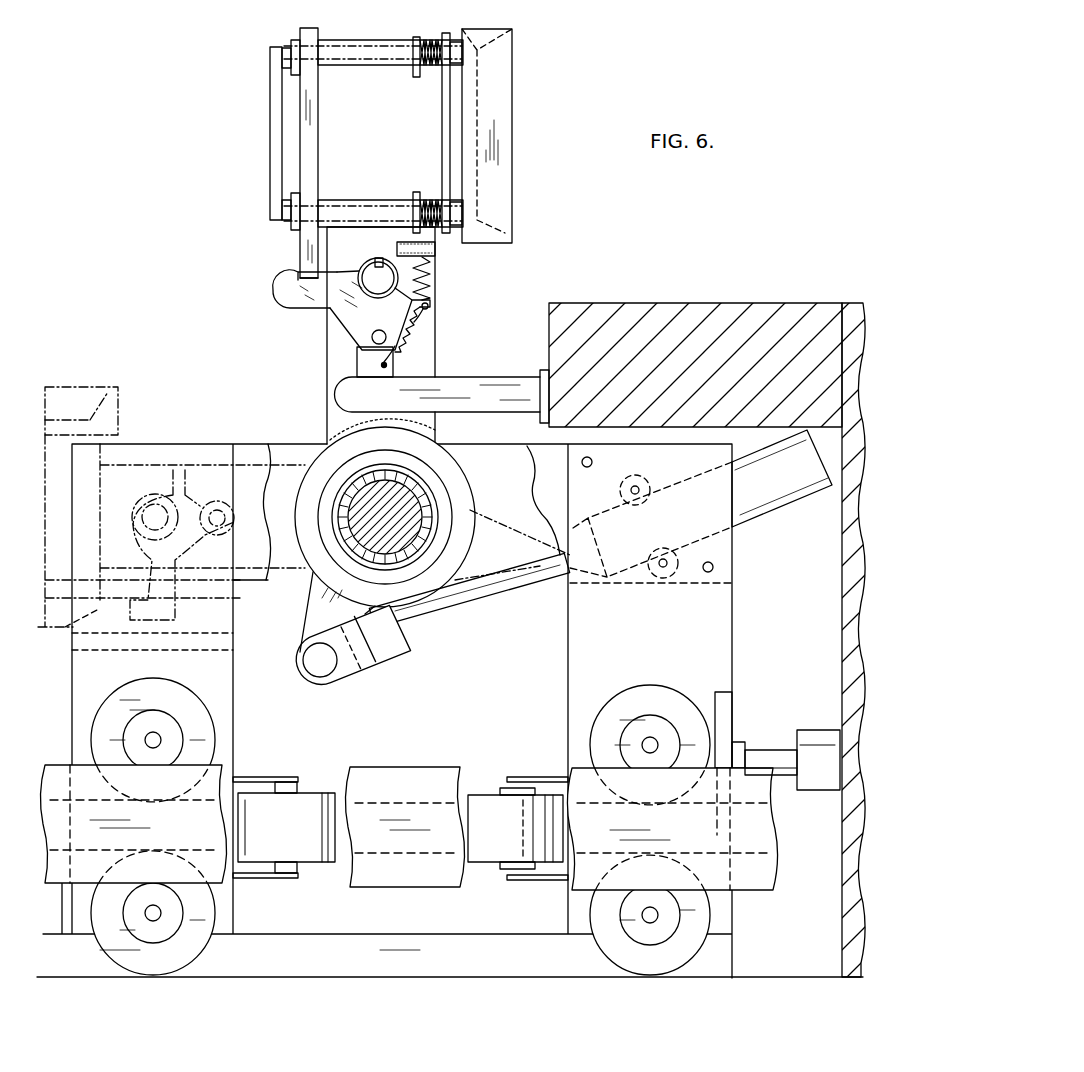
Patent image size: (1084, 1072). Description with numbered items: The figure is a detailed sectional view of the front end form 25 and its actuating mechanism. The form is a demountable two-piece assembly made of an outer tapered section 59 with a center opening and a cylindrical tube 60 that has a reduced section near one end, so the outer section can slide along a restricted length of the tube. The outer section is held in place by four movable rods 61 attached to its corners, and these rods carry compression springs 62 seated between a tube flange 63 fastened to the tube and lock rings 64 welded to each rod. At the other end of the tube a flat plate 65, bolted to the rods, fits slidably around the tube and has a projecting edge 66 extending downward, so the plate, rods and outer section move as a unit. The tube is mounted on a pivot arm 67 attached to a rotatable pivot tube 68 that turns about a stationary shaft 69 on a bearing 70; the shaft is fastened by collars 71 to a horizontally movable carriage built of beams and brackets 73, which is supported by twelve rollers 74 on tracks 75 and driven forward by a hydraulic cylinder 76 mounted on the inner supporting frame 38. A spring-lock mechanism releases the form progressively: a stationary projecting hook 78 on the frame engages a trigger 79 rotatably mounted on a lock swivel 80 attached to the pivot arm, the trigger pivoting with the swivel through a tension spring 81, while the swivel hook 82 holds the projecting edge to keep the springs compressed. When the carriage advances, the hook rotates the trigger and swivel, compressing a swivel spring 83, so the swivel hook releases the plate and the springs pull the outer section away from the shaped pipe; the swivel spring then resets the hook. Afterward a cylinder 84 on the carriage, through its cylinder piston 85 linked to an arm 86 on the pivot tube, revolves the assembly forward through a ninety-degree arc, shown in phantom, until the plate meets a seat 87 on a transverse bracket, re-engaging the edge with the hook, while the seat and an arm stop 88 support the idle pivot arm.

The front end form 25 is at (396, 143).
The inner supporting frame 38 is at (640, 306).
The outer tapered section 59 is at (492, 36).
The cylindrical tube 60 is at (272, 144).
The movable rods 61 is at (383, 48).
The compression springs 62 is at (432, 68).
The tube flange 63 is at (448, 38).
The lock rings 64 is at (418, 45).
The flat plate 65 is at (313, 38).
The projecting edge 66 is at (305, 252).
The pivot arm 67 is at (334, 420).
The pivot tube 68 is at (312, 486).
The stationary shaft 69 is at (410, 506).
The bearing 70 is at (333, 535).
The collars 71 is at (338, 510).
The brackets 73 is at (120, 650).
The rollers 74 is at (184, 705).
The tracks 75 is at (405, 882).
The hydraulic cylinder 76 is at (812, 730).
The projecting hook 78 is at (462, 388).
The trigger 79 is at (360, 358).
The lock swivel 80 is at (355, 322).
The tension spring 81 is at (420, 332).
The swivel hook 82 is at (280, 296).
The swivel spring 83 is at (432, 278).
The cylinder 84 is at (766, 505).
The cylinder piston 85 is at (432, 628).
The arm 86 is at (318, 604).
The seat 87 is at (63, 638).
The arm stop 88 is at (238, 600).